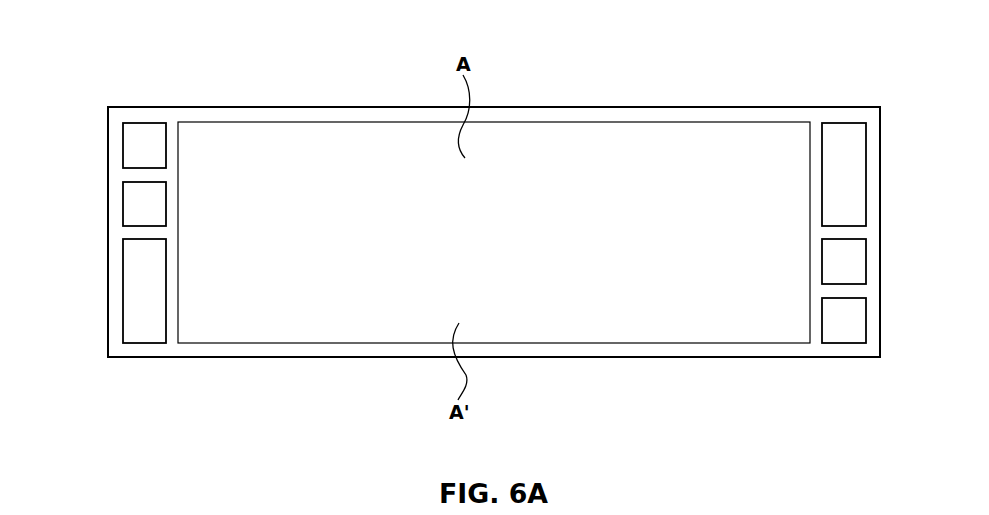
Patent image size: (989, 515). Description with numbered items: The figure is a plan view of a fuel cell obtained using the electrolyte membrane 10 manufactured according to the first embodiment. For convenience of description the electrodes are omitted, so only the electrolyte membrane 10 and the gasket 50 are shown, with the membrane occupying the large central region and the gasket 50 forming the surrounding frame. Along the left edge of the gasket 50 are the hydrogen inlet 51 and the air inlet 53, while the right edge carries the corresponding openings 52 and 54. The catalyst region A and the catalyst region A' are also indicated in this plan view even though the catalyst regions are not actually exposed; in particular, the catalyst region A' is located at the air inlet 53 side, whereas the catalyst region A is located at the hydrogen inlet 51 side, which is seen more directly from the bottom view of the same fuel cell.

The electrolyte membrane 10 is at (253, 222).
The gasket 50 is at (574, 108).
The hydrogen inlet 51 is at (123, 146).
The second sensor units 52 is at (866, 263).
The air inlet 53 is at (123, 297).
The second speaker unit 54 is at (866, 179).